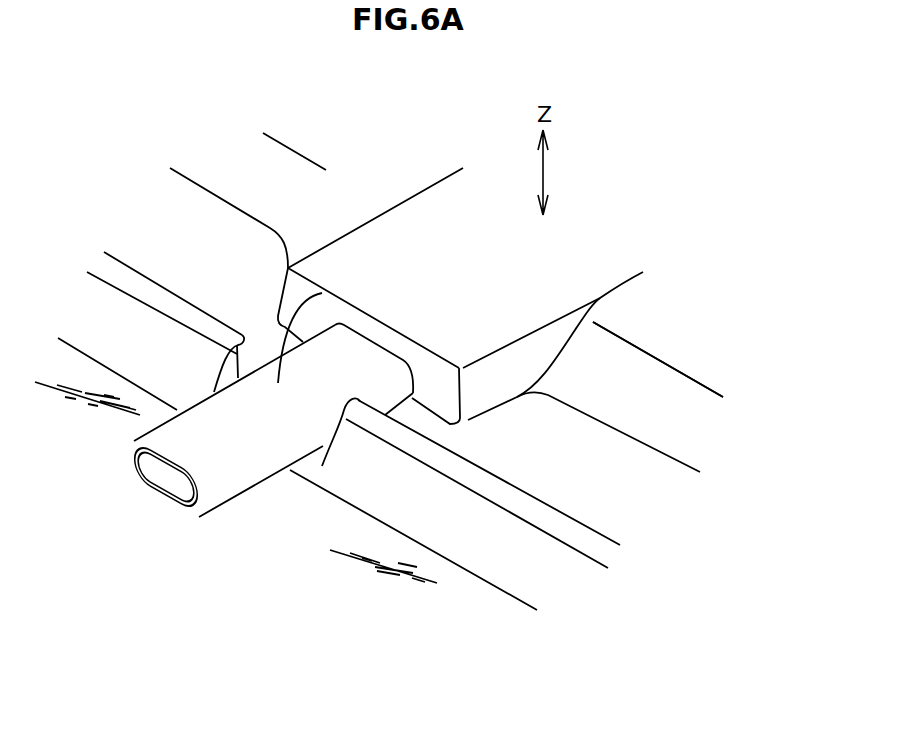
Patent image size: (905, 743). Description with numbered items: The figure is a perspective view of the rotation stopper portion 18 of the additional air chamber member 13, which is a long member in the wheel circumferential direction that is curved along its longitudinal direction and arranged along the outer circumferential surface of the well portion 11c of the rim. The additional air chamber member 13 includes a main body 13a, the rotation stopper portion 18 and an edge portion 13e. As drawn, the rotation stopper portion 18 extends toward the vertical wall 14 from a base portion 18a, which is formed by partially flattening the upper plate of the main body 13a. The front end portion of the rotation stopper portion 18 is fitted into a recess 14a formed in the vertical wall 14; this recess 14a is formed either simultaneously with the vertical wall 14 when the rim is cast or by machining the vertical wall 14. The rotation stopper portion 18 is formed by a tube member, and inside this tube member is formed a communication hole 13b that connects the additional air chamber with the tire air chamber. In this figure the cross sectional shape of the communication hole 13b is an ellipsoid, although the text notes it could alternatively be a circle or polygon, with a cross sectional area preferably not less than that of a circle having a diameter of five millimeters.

The well portion 11c is at (385, 552).
The additional air chamber member 13 is at (693, 418).
The main body 13a is at (695, 342).
The communication hole 13b is at (185, 483).
The edge portion 13e is at (213, 270).
The vertical wall 14 is at (170, 363).
The recess 14a is at (316, 460).
The rotation stopper portion 18 is at (322, 293).
The base portion 18a is at (420, 247).